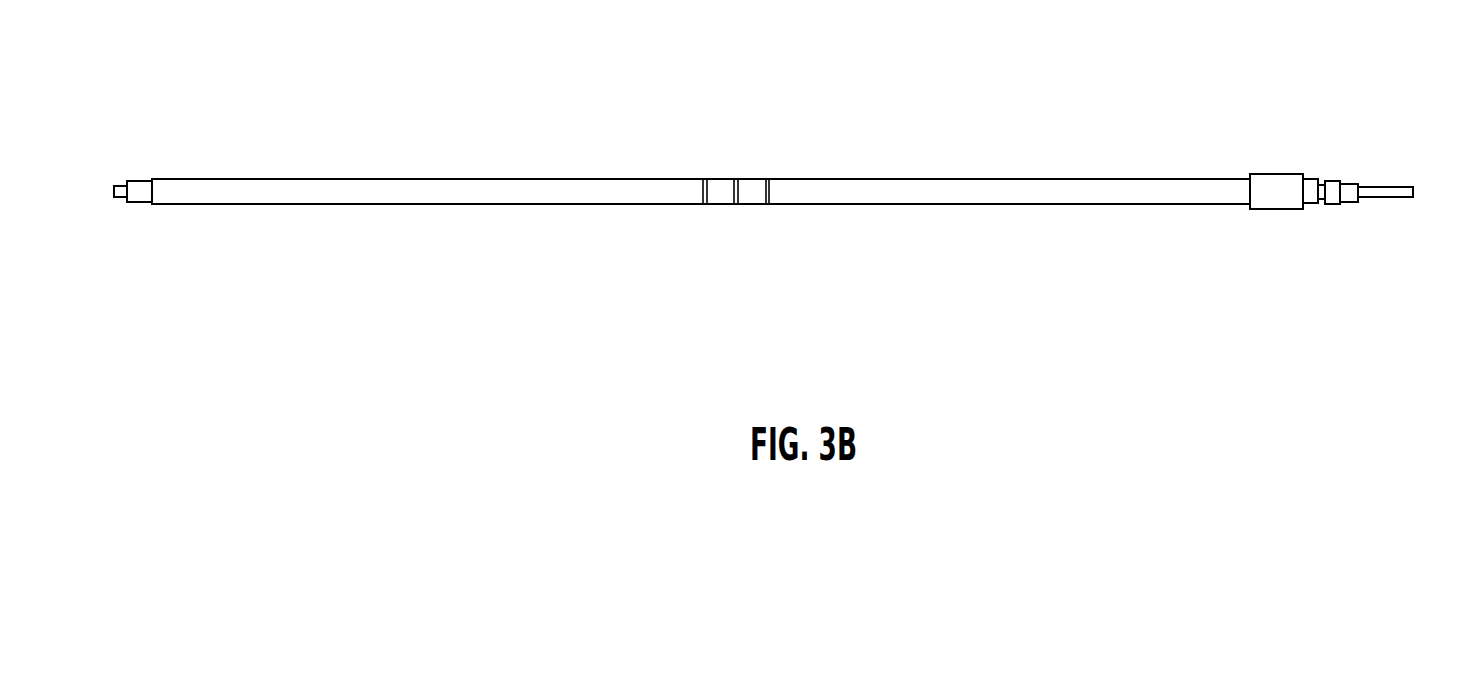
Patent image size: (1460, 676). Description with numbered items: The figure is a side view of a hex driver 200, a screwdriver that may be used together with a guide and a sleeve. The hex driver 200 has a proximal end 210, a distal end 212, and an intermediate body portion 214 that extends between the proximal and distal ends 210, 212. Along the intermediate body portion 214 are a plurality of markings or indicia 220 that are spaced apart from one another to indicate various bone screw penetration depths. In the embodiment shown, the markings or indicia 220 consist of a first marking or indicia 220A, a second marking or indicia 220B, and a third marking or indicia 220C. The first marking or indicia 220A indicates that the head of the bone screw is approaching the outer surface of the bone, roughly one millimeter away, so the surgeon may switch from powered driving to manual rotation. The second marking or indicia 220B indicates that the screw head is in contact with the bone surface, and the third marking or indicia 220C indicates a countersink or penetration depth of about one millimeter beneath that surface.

The hex driver 200 is at (733, 235).
The proximal end 210 is at (1340, 240).
The distal end 212 is at (128, 237).
The intermediate body portion 214 is at (870, 288).
The markings or indicia 220 is at (761, 172).
The first marking or indicia 220A is at (705, 204).
The second marking or indicia 220B is at (736, 204).
The third marking or indicia 220C is at (767, 204).